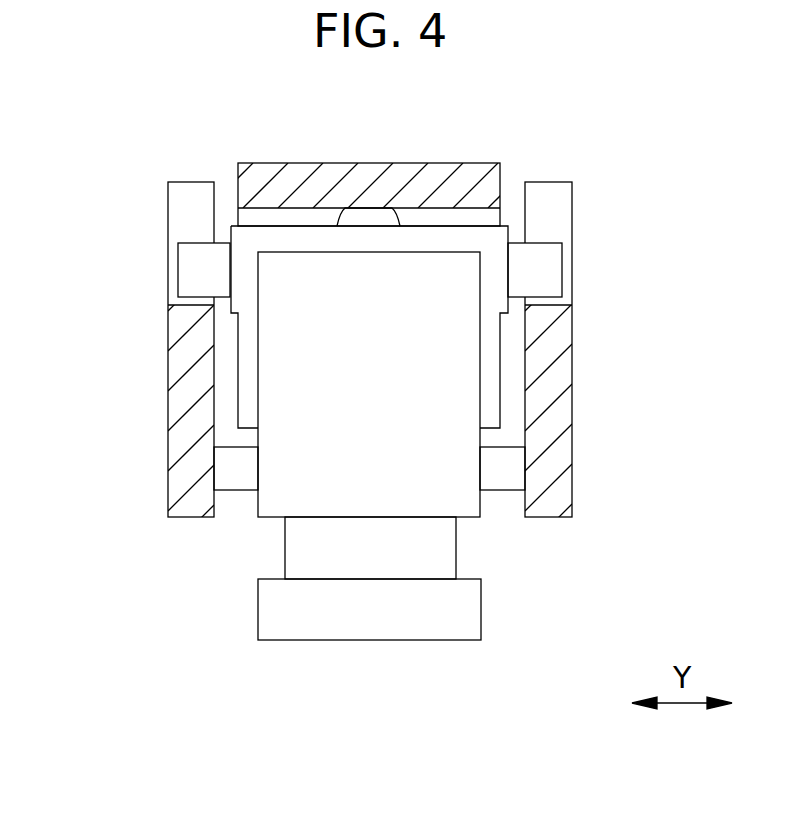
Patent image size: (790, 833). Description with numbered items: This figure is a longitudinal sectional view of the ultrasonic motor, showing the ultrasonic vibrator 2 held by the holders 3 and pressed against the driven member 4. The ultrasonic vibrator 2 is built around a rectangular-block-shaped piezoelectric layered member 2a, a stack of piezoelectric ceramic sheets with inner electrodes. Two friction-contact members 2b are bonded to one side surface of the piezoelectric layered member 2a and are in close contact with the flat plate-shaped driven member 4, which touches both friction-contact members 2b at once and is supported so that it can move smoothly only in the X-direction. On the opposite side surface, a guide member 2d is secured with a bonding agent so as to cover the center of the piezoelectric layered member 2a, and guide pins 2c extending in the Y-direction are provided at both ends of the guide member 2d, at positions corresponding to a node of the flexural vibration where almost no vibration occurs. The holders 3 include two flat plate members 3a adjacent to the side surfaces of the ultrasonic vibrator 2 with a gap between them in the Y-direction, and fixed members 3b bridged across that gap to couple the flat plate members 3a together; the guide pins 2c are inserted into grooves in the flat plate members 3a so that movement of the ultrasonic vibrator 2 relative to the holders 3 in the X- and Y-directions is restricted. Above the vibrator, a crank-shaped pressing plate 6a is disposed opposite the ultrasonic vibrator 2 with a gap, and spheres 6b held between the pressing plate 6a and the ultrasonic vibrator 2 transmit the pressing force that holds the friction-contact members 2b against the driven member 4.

The ultrasonic vibrator 2 is at (399, 350).
The piezoelectric layered member 2a is at (480, 370).
The friction-contact members 2b is at (468, 548).
The guide pins 2c is at (200, 243).
The guide member 2d is at (480, 226).
The holders 3 is at (349, 366).
The flat plate members 3a is at (168, 408).
The fixed members 3b is at (214, 470).
The driven member 4 is at (481, 607).
The pressing plate 6a is at (441, 163).
The spheres 6b is at (340, 213).